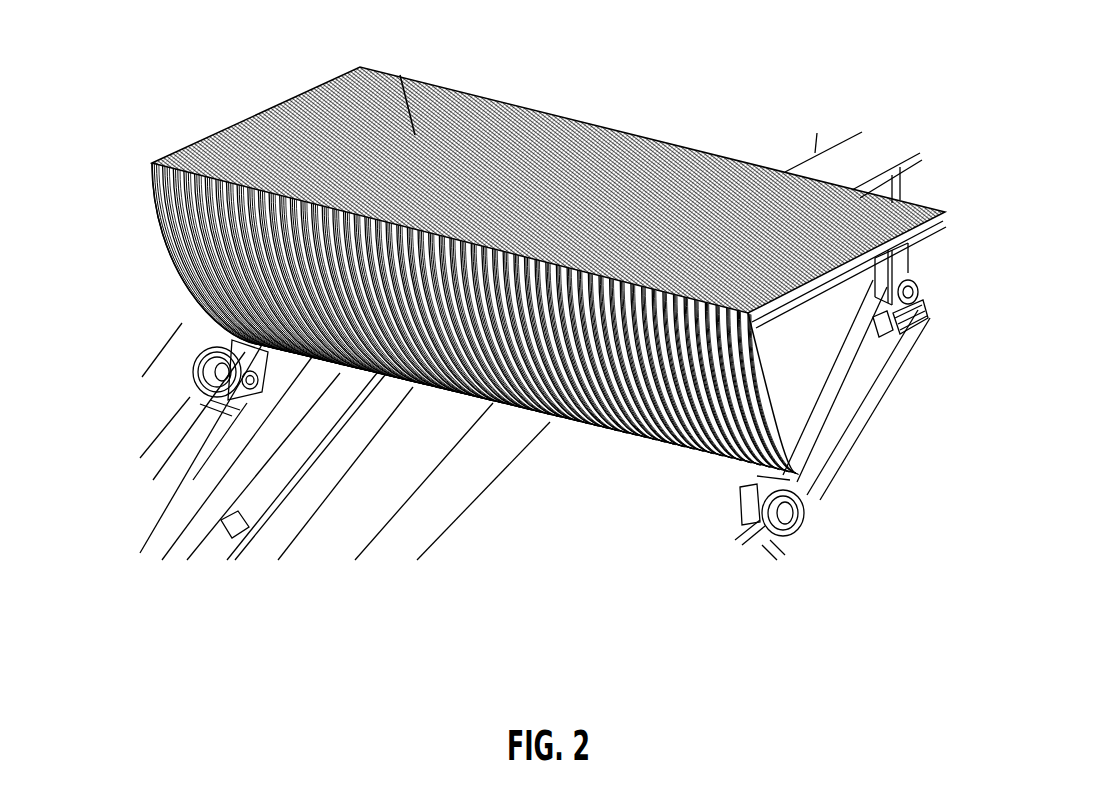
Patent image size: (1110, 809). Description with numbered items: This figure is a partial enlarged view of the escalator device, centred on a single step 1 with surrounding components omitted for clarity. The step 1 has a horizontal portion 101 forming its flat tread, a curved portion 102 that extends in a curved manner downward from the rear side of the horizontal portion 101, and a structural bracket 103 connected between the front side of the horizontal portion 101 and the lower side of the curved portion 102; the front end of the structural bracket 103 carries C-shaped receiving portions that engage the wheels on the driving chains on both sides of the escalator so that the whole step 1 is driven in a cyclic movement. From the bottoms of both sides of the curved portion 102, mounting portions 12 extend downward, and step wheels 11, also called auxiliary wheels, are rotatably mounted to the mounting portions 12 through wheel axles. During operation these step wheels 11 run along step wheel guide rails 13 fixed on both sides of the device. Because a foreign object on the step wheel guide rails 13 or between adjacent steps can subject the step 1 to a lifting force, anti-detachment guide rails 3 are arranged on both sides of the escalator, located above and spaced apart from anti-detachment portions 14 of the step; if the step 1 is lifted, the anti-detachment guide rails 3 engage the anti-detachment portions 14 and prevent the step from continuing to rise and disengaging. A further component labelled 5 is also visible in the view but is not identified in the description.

The step 1 is at (173, 156).
The horizontal portion 101 is at (398, 73).
The curved portion 102 is at (155, 212).
The structural bracket 103 is at (840, 387).
The anti-detachment guide rail 3 is at (220, 460).
The guide roller 5 is at (918, 280).
The step wheel 11 is at (203, 355).
The mounting portion 12 is at (227, 343).
The step wheel guide rail 13 is at (192, 398).
The anti-detachment portion 14 is at (207, 407).